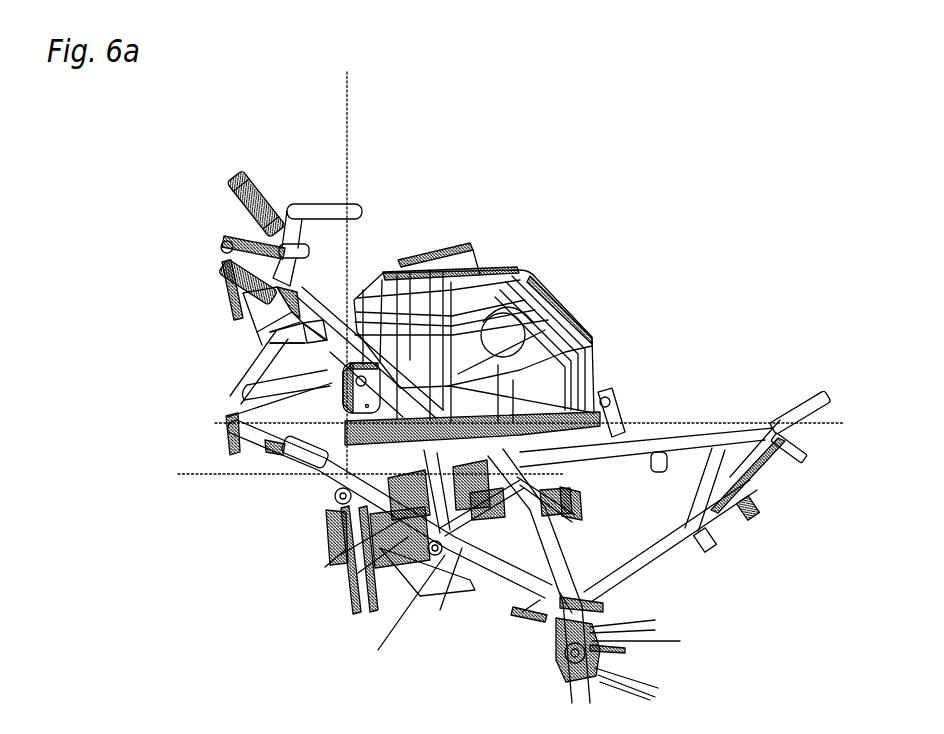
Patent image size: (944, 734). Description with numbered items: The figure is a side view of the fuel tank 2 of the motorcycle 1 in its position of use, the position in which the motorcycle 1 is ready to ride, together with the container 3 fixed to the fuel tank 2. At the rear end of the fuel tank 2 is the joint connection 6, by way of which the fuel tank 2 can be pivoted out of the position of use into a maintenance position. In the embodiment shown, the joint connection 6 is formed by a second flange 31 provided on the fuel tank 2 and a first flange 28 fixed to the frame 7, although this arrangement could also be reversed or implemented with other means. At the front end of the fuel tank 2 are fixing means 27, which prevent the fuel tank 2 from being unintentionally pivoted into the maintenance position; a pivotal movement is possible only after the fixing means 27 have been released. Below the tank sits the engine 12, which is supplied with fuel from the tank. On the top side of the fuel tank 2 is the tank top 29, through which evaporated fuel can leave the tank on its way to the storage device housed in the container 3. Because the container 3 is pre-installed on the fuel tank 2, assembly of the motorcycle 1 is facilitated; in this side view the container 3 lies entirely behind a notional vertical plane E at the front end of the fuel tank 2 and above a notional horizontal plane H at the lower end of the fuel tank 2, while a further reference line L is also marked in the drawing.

The motorcycle 1 is at (772, 254).
The fuel tank 2 is at (573, 327).
The container 3 is at (224, 440).
The joint connection 6 is at (612, 400).
The frame 7 is at (615, 452).
The engine 12 is at (316, 554).
The fixing means 27 is at (268, 340).
The first flange 28 is at (626, 432).
The tank top 29 is at (463, 242).
The second flange 31 is at (603, 398).
The notional vertical plane E is at (347, 148).
The notional horizontal plane H is at (833, 423).
The lower horizontal line L is at (220, 477).